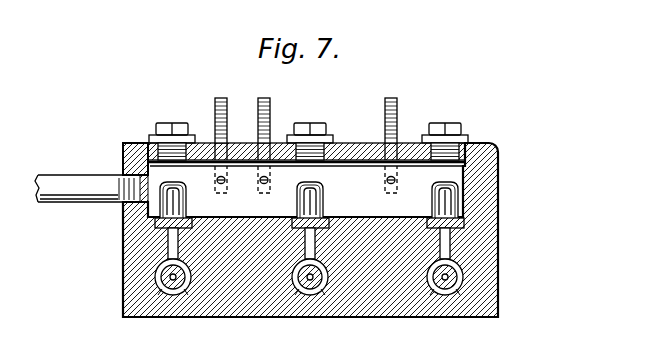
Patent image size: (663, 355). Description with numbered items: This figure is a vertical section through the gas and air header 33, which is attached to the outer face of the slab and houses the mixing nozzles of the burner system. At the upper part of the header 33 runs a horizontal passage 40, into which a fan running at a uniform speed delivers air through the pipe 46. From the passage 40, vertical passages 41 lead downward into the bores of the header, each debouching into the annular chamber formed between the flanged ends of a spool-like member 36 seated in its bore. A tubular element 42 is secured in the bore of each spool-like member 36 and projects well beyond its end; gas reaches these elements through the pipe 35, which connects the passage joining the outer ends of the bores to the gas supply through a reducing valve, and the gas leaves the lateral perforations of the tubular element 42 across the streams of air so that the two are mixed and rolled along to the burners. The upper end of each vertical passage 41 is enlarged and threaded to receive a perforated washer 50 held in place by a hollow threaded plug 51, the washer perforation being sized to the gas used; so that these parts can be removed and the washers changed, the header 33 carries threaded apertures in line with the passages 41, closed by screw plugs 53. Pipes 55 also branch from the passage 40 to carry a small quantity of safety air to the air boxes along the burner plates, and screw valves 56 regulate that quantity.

The gas and air header 33 is at (488, 229).
The horizontal passage 40 is at (461, 178).
The air pipe 46 is at (77, 180).
The screw plug 53 is at (171, 123).
The screw valve 56 is at (263, 100).
The air pipe 55 is at (228, 182).
The plug 51 is at (158, 222).
The washer 50 is at (160, 232).
The vertical passage 41 is at (171, 248).
The spool-like member 36 is at (155, 280).
The gas pipe 35 is at (156, 290).
The tubular element 42 is at (169, 292).